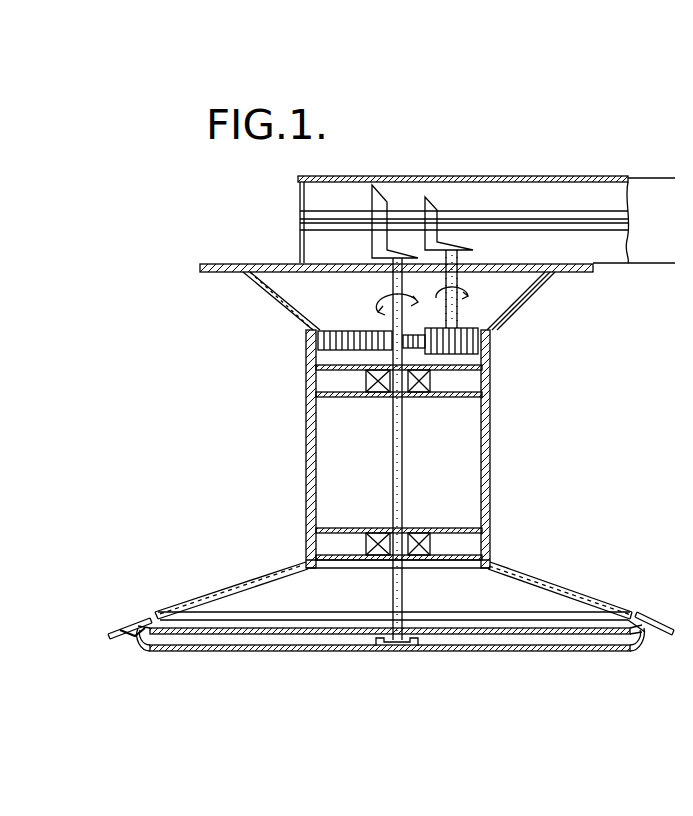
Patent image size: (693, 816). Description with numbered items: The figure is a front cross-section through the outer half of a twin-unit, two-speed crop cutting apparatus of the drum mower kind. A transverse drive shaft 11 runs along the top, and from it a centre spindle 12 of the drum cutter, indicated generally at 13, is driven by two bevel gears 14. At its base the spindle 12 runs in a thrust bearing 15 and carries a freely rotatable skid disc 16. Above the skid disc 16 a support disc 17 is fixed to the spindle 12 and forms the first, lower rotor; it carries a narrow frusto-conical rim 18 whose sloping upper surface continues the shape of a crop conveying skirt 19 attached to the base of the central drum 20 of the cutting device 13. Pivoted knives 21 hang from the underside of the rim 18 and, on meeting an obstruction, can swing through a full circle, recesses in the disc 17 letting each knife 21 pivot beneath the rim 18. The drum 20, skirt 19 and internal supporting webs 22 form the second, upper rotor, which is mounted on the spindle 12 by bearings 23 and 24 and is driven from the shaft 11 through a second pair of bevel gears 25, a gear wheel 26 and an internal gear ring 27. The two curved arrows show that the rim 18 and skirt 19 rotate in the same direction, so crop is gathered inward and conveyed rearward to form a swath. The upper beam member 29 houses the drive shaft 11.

The transverse drive shaft 11 is at (527, 215).
The centre spindle 12 is at (404, 462).
The drum cutter 13 is at (534, 423).
The bevel gears 14 is at (384, 200).
The thrust bearing 15 is at (382, 648).
The skid disc 16 is at (582, 652).
The support disc 17 is at (496, 636).
The frusto-conical rim 18 is at (640, 614).
The crop conveying skirt 19 is at (540, 577).
The central drum 20 is at (483, 497).
The pivoted knives 21 is at (126, 625).
The internal supporting webs 22 is at (346, 398).
The bearing 23 is at (418, 398).
The bearing 24 is at (418, 530).
The second pair of bevel gears 25 is at (432, 212).
The gear wheel 26 is at (460, 342).
The internal gear ring 27 is at (335, 343).
The top plate 29 is at (612, 178).